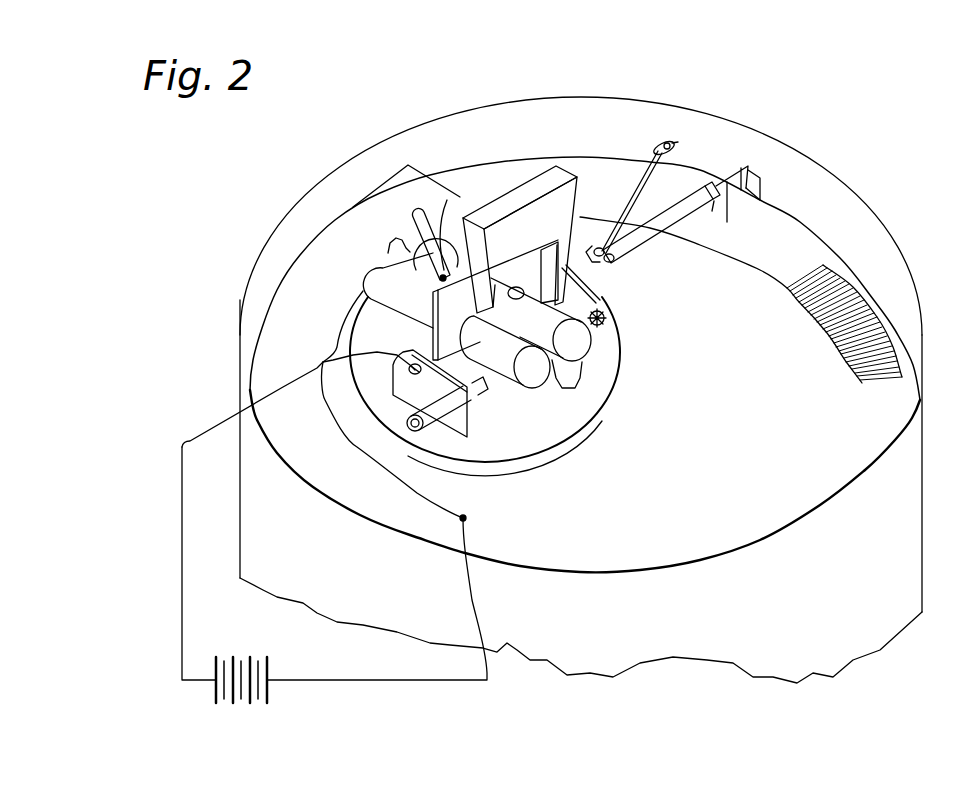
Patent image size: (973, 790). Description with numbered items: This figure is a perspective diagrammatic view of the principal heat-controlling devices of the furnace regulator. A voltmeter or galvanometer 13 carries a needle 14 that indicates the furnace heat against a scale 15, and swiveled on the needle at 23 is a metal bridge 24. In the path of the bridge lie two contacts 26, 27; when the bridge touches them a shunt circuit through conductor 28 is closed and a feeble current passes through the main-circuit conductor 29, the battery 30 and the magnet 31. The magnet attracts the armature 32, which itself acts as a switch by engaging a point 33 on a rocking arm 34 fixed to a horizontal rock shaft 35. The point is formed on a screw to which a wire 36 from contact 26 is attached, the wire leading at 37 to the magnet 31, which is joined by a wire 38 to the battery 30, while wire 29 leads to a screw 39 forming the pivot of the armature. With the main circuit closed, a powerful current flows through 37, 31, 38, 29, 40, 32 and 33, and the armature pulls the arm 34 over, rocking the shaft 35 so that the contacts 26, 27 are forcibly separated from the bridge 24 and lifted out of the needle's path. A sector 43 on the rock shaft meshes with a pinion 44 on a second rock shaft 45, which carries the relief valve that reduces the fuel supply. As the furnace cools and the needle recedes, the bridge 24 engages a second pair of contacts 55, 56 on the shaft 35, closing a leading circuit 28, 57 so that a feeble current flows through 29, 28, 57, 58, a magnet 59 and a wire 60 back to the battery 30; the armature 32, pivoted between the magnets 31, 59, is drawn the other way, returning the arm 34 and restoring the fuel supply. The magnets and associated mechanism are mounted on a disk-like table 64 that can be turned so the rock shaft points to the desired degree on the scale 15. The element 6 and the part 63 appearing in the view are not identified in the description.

The armature 6 is at (506, 287).
The voltmeter or galvanometer 13 is at (925, 502).
The needle 14 is at (617, 190).
The scale 15 is at (838, 272).
The swivel 23 is at (661, 143).
The metal bridge 24 is at (678, 142).
The contact 26 is at (758, 193).
The contact 27 is at (728, 216).
The conductor (shunt circuit) 28 is at (708, 188).
The conductor (main circuit) 29 is at (180, 588).
The battery 30 is at (270, 692).
The magnet 31 is at (415, 274).
The armature 32 is at (437, 312).
The screw point 33 is at (440, 278).
The rocking arm 34 is at (550, 272).
The rock shaft 35 is at (607, 268).
The wire 36 is at (502, 170).
The wire lead 37 is at (422, 198).
The wire 38 is at (342, 323).
The screw 39 is at (407, 380).
The conductor 40 is at (272, 386).
The sector 43 is at (597, 303).
The pinion 44 is at (607, 320).
The rock shaft 45 is at (485, 387).
The contact 55 is at (748, 168).
The contact 56 is at (710, 215).
The wire 57 is at (540, 305).
The wire 58 is at (515, 336).
The magnet 59 is at (552, 353).
The wire 60 is at (470, 495).
The housing 63 is at (520, 239).
The table 64 is at (615, 409).